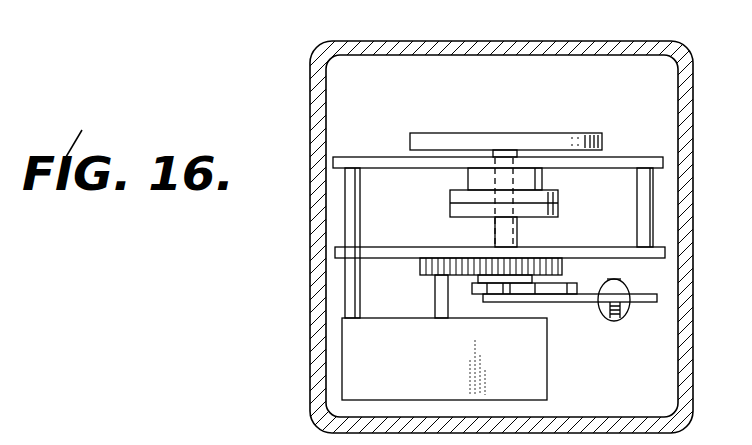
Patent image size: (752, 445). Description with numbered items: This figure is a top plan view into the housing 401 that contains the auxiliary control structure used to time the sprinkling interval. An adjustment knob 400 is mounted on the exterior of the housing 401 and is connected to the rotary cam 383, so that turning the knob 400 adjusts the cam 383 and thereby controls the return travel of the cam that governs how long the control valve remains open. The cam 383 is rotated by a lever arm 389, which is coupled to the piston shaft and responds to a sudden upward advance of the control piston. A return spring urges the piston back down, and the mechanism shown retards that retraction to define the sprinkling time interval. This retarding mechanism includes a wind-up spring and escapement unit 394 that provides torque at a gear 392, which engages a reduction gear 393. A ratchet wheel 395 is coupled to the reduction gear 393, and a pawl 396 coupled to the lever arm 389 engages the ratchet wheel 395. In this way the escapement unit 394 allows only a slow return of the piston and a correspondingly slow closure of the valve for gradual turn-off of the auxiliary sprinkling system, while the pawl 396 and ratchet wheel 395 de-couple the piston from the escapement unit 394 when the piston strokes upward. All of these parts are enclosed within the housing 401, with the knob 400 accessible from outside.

The housing 401 is at (555, 41).
The adjustment knob 400 is at (453, 143).
The rotary cam 383 is at (452, 198).
The reduction gear 393 is at (548, 258).
The gear 392 is at (427, 264).
The ratchet wheel 395 is at (470, 289).
The lever arm 389 is at (572, 302).
The pawl 396 is at (573, 283).
The wind-up spring and escapement unit 394 is at (444, 359).